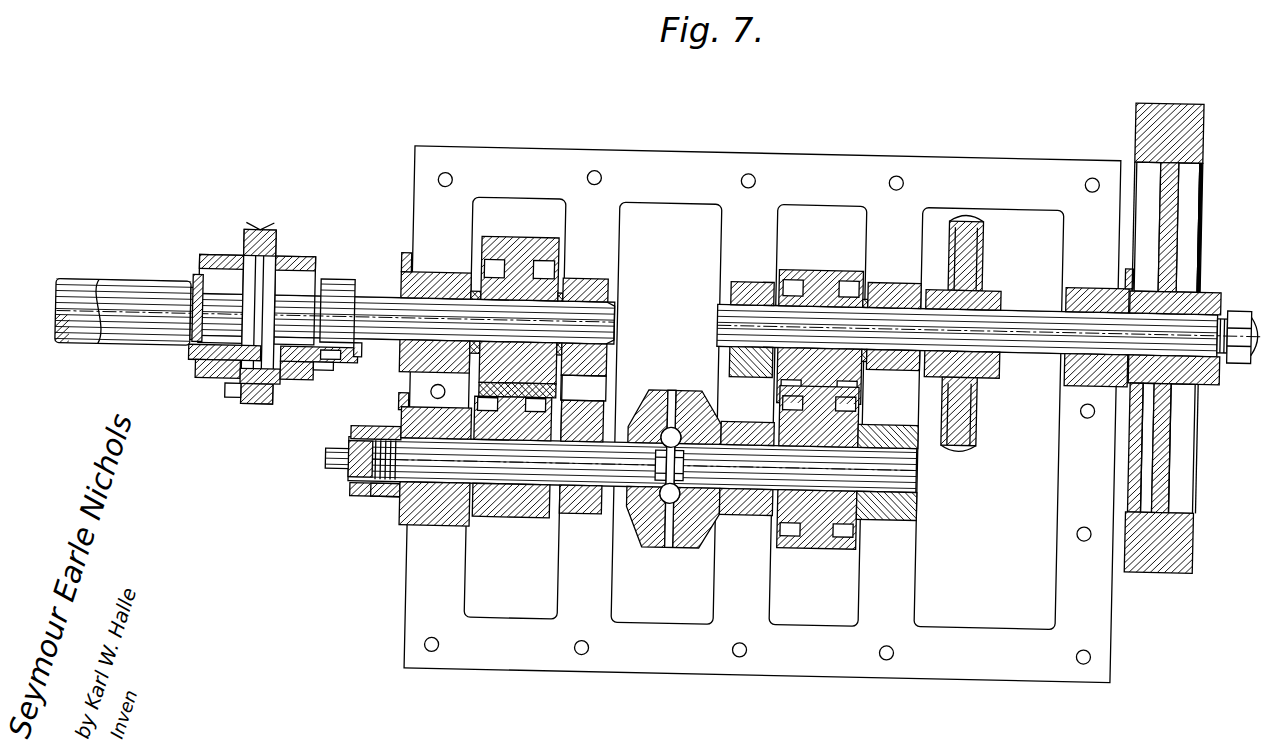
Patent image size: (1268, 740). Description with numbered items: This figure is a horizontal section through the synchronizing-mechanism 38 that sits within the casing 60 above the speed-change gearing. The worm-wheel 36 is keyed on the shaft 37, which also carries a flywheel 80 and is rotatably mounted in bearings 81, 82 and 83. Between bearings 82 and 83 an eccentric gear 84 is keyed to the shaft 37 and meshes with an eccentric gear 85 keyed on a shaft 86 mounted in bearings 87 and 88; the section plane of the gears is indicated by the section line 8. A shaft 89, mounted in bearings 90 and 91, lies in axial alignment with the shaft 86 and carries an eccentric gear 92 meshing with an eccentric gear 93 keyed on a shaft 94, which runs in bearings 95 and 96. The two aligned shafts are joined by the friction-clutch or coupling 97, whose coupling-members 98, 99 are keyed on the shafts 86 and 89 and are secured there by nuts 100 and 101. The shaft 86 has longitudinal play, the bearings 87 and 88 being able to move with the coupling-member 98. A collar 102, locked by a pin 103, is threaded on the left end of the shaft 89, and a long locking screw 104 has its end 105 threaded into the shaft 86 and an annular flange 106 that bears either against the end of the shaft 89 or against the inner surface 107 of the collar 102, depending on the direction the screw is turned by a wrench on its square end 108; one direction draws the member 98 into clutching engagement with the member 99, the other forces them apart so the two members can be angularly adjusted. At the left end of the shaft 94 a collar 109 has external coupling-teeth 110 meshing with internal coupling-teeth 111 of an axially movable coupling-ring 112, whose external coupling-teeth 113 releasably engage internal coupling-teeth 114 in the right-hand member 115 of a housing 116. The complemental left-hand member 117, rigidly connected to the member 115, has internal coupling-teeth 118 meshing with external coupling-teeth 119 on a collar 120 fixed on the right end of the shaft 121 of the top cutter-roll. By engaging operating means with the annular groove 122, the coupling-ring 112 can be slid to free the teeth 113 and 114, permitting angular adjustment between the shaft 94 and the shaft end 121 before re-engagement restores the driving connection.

The section line 8- 8 is at (866, 262).
The worm-wheel 36 is at (964, 438).
The shaft 37 is at (721, 321).
The synchronizing-mechanism 38 is at (905, 148).
The casing 60 is at (770, 146).
The flywheel 80 is at (1169, 88).
The bearing 81 is at (1069, 282).
The bearing 82 is at (895, 273).
The bearing 83 is at (749, 275).
The eccentric gear 84 is at (816, 262).
The eccentric gear 85 is at (806, 540).
The shaft 86 is at (924, 470).
The bearing 87 is at (890, 510).
The bearing 88 is at (745, 508).
The shaft 89 is at (585, 510).
The bearing 90 is at (576, 394).
The bearing 91 is at (440, 500).
The eccentric gear 92 is at (520, 515).
The eccentric gear 93 is at (537, 235).
The shaft 94 is at (404, 302).
The bearing 95 is at (587, 275).
The bearing 96 is at (437, 272).
The friction-clutch or coupling 97 is at (677, 385).
The coupling-member 98 is at (707, 542).
The coupling-member 99 is at (641, 542).
The nut 100 is at (688, 400).
The nut 101 is at (660, 418).
The collar 102 is at (392, 497).
The pin 103 is at (396, 430).
The coupling-operating or locking screw 104 is at (356, 470).
The end of locking screw 105 is at (742, 438).
The annular flange 106 is at (364, 498).
The inner surface of collar 107 is at (372, 428).
The square end 108 is at (332, 460).
The collar 109 is at (366, 352).
The external coupling-teeth 110 is at (316, 364).
The internal coupling-teeth 111 is at (334, 366).
The coupling-ring 112 is at (346, 360).
The external coupling-teeth 113 is at (300, 382).
The internal coupling-teeth 114 is at (272, 387).
The right-hand housing member 115 is at (310, 259).
The housing 116 is at (256, 226).
The left-hand housing member 117 is at (214, 259).
The internal coupling-teeth 118 is at (232, 392).
The external coupling-teeth 119 is at (212, 380).
The collar 120 is at (196, 358).
The shaft of top cutter-carrier or roll 121 is at (176, 286).
The annular groove 122 is at (344, 281).